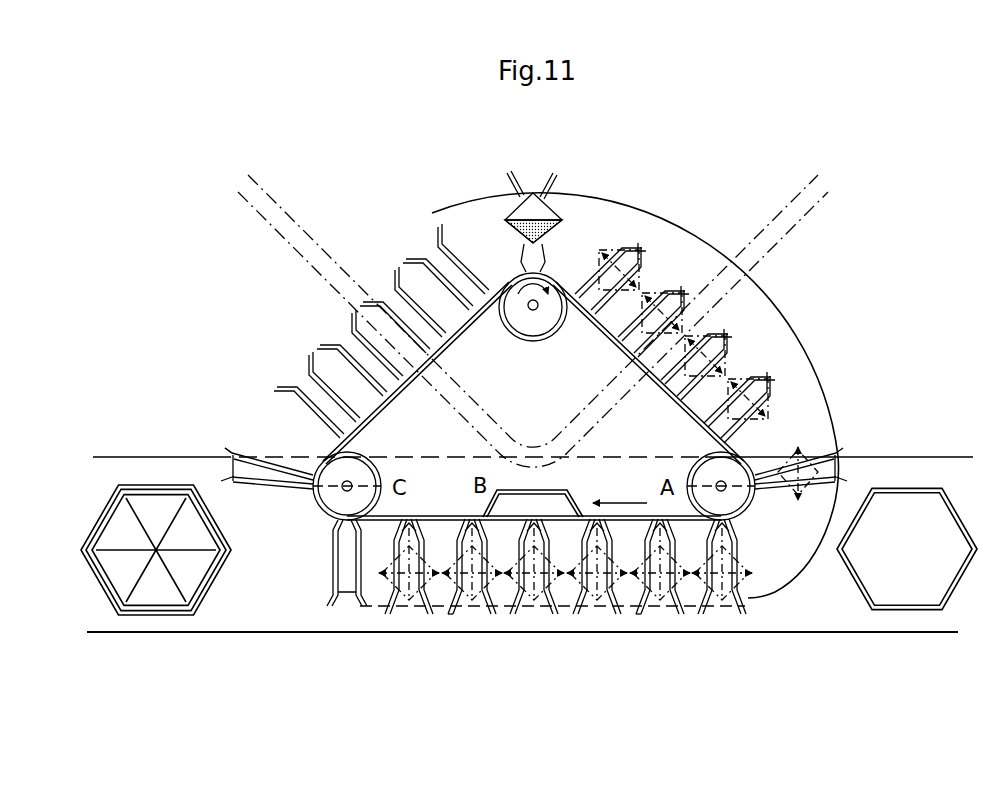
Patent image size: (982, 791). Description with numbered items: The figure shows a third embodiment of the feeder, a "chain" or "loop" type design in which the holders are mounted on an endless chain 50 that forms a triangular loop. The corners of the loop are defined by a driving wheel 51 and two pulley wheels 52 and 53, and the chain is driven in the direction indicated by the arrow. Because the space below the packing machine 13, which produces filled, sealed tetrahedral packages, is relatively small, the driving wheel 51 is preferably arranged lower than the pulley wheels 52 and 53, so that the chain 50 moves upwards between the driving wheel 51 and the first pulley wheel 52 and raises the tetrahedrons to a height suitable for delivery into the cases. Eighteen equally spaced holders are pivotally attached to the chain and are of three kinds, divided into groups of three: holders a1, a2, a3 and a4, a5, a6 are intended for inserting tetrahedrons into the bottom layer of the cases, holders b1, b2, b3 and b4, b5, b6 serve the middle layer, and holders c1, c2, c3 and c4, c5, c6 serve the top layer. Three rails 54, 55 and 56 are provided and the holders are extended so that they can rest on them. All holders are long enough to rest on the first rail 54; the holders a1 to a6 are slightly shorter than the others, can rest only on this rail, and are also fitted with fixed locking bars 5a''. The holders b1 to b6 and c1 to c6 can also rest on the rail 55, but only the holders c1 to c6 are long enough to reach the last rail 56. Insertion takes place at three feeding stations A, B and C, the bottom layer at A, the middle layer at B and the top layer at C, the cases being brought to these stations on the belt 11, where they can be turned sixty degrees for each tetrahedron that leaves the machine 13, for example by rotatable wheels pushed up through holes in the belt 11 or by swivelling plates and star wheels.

The belt 11 is at (955, 618).
The packing machine 13 is at (732, 182).
The endless chain 50 is at (660, 386).
The driving wheel 51 is at (541, 322).
The first pulley wheel 52 is at (702, 460).
The second pulley wheel 53 is at (365, 474).
The first rail 54 is at (832, 436).
The second rail 55 is at (660, 613).
The last rail 56 is at (465, 613).
The fixed locking bars 5a'' is at (530, 451).
The holder a1 is at (822, 448).
The holder a2 is at (746, 365).
The holder a3 is at (712, 337).
The holder a4 is at (308, 404).
The holder a5 is at (240, 480).
The holder a6 is at (332, 548).
The holder b1 is at (608, 561).
The holder b2 is at (670, 546).
The holder b3 is at (732, 547).
The holder b4 is at (424, 262).
The holder b5 is at (382, 308).
The holder b6 is at (346, 357).
The holder c1 is at (418, 590).
The holder c2 is at (482, 578).
The holder c3 is at (543, 559).
The holder c4 is at (648, 292).
The holder c5 is at (606, 262).
The holder c6 is at (522, 200).